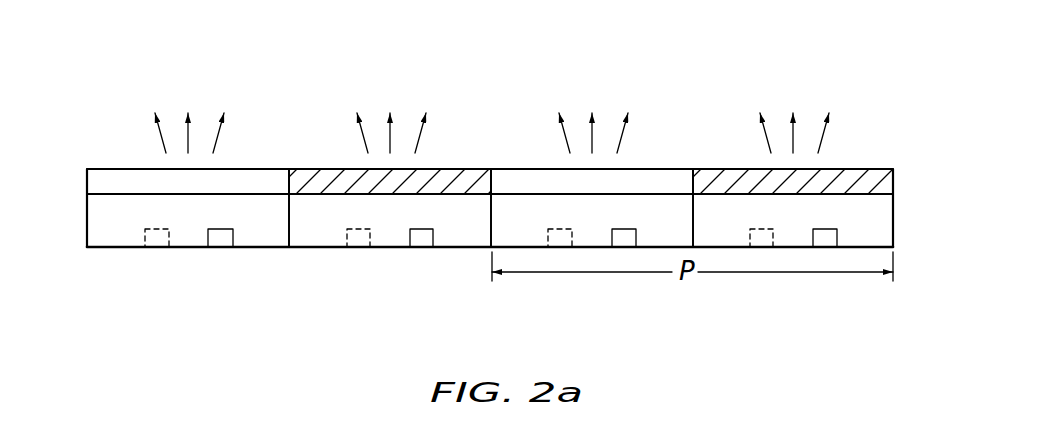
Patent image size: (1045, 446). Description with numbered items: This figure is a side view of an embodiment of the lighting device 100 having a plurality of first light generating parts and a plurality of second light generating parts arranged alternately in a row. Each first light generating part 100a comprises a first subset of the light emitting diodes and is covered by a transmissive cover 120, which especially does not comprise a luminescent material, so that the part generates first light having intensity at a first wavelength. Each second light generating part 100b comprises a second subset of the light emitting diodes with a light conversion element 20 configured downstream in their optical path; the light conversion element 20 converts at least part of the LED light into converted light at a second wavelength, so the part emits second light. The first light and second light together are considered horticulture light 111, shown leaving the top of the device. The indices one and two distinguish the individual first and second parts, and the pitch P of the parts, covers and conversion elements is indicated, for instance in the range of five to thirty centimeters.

The lighting device 100 is at (855, 100).
The first light generating part 100a is at (127, 258).
The second light generating part 100b is at (842, 260).
The horticulture light 111 is at (597, 75).
The transmissive cover 120 is at (117, 182).
The light conversion element 20 is at (848, 172).